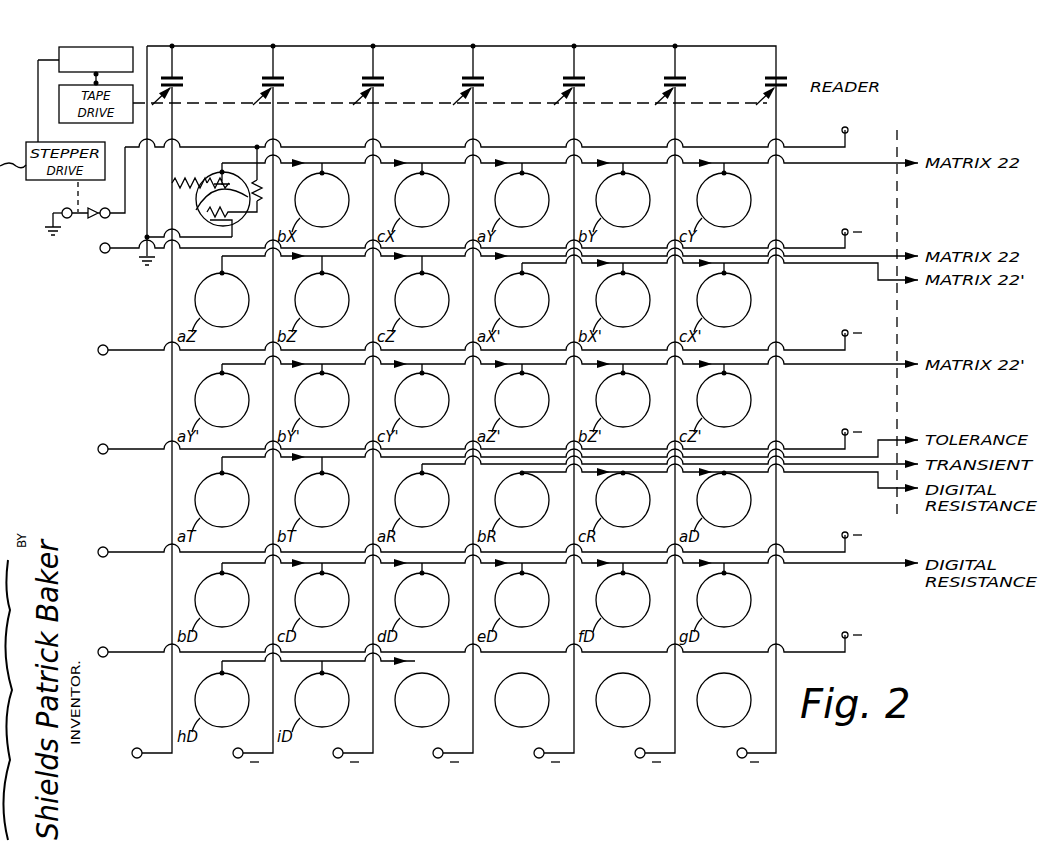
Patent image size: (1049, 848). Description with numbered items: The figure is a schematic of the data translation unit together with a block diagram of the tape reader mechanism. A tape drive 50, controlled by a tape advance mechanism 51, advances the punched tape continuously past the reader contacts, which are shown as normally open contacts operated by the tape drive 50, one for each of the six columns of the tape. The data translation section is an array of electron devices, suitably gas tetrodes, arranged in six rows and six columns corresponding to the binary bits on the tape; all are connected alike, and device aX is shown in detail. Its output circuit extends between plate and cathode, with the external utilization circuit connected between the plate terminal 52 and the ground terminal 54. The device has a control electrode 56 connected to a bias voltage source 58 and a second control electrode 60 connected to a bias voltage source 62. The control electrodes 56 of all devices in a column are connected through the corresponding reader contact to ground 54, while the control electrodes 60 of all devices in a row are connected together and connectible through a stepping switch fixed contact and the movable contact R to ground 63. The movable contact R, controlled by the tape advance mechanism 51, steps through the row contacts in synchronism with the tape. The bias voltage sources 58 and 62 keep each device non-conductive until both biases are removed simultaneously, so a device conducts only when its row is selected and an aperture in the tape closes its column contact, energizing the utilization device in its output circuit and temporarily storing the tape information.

The tape drive 50 is at (97, 123).
The tape advance mechanism 51 is at (59, 52).
The plate terminal 52 is at (298, 166).
The ground terminal 54 is at (140, 259).
The control electrode 56 is at (198, 203).
The bias voltage source 58 is at (138, 759).
The control electrode 60 is at (234, 220).
The bias voltage source 62 is at (848, 128).
The ground 63 is at (46, 227).